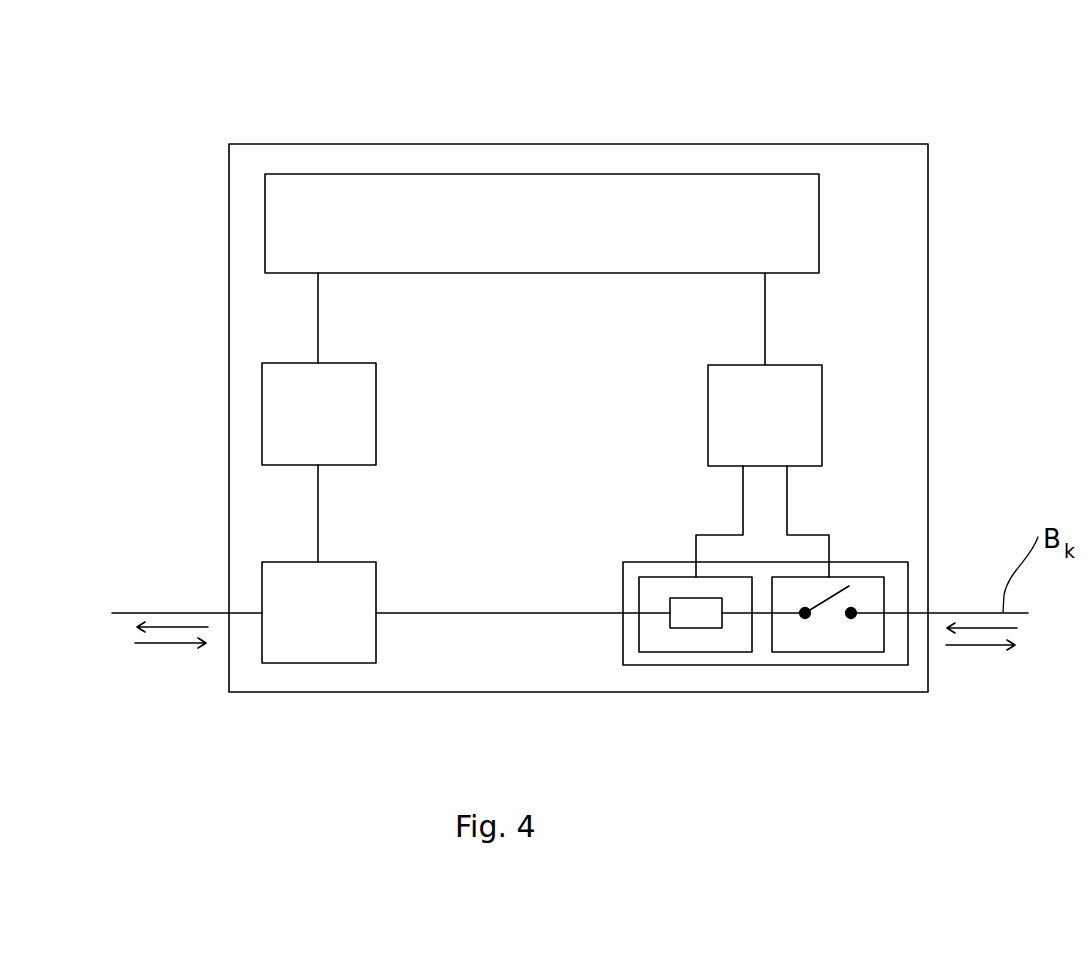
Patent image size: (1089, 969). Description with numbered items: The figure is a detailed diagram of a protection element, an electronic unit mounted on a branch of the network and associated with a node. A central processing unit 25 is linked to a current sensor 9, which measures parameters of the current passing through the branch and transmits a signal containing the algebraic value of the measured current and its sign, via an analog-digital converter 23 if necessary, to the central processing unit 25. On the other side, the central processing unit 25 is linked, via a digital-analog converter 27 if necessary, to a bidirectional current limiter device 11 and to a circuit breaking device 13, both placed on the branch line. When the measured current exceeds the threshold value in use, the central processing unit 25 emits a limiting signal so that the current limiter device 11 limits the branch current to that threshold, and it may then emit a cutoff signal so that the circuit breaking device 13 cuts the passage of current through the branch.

The current sensor 9 is at (300, 617).
The bidirectional current limiter device 11 is at (693, 652).
The circuit breaking device 13 is at (836, 652).
The analog-digital converter 23 is at (300, 414).
The central processing unit 25 is at (711, 213).
The digital-analog converter 27 is at (822, 400).